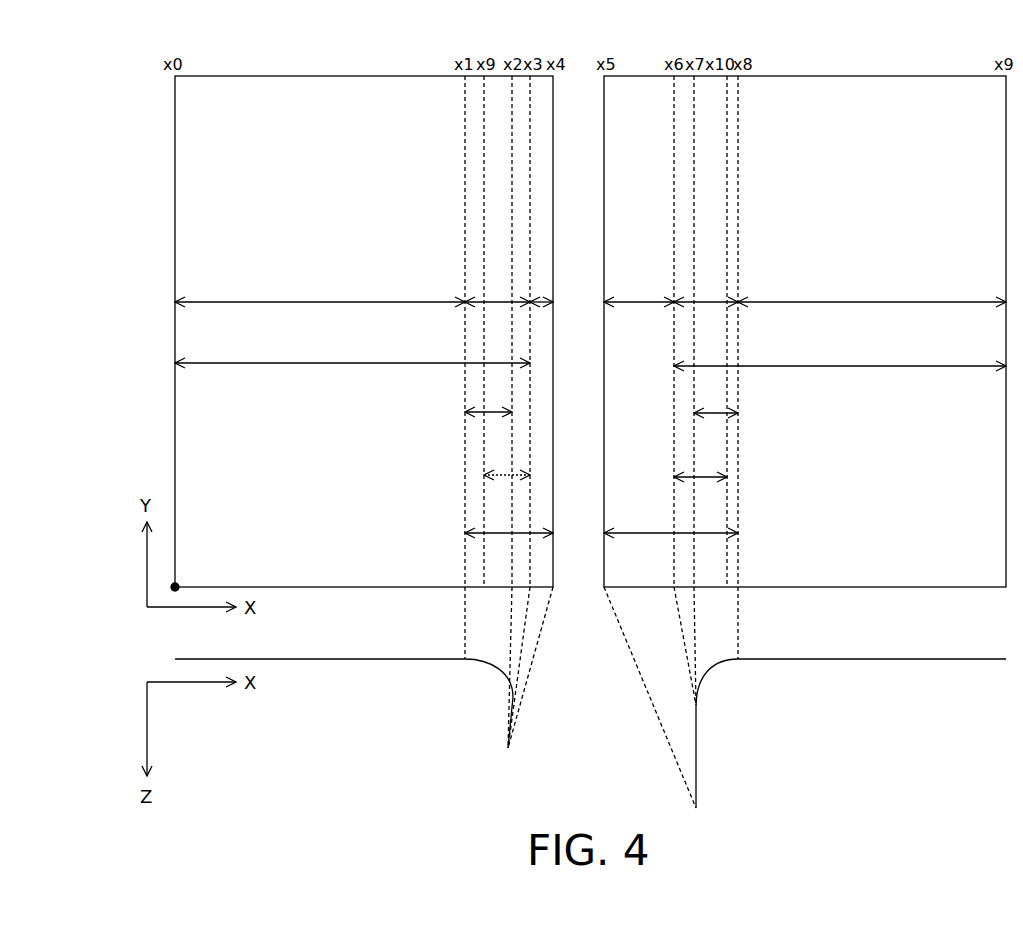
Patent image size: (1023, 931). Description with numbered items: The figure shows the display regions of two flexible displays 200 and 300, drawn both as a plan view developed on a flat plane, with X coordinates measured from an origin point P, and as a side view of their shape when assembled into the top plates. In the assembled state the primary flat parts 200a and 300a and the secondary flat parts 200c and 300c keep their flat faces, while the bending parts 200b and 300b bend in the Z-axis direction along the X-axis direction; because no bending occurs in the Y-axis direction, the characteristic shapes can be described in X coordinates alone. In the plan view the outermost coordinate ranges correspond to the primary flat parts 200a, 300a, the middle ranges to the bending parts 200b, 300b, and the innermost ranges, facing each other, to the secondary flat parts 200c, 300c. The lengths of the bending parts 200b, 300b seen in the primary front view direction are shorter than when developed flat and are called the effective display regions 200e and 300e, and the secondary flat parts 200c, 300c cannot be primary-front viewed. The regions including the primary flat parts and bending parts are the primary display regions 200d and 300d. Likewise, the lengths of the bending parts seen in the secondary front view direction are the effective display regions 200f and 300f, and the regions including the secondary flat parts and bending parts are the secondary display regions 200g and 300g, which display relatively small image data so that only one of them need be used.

The flexible display 300 is at (308, 76).
The flexible display 200 is at (846, 76).
The origin point P is at (177, 586).
The primary flat part 300a is at (306, 659).
The bending part 300b is at (494, 301).
The secondary flat part 300c is at (539, 302).
The primary display region 300d is at (352, 348).
The effective display region 300e is at (491, 410).
The effective display region 300f is at (500, 473).
The secondary display region 300g is at (497, 532).
The primary flat part 200a is at (841, 659).
The bending part 200b is at (708, 302).
The secondary flat part 200c is at (737, 743).
The primary display region 200d is at (840, 351).
The effective display region 200e is at (711, 413).
The effective display region 200f is at (711, 476).
The secondary display region 200g is at (711, 533).